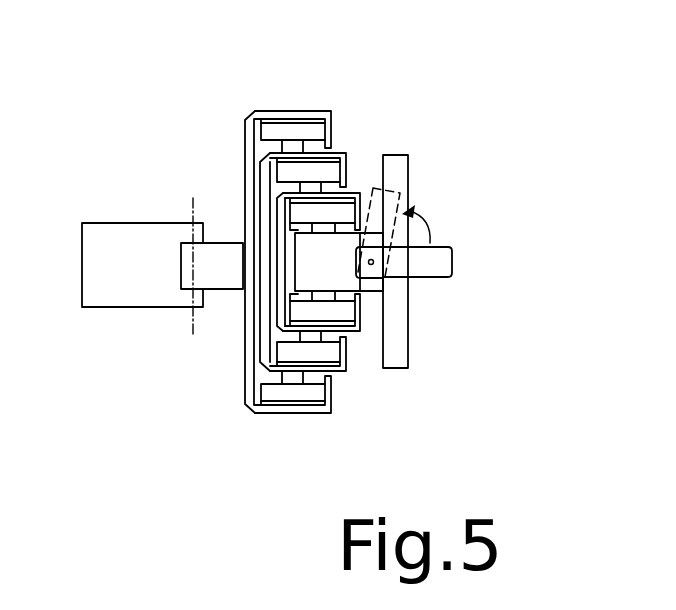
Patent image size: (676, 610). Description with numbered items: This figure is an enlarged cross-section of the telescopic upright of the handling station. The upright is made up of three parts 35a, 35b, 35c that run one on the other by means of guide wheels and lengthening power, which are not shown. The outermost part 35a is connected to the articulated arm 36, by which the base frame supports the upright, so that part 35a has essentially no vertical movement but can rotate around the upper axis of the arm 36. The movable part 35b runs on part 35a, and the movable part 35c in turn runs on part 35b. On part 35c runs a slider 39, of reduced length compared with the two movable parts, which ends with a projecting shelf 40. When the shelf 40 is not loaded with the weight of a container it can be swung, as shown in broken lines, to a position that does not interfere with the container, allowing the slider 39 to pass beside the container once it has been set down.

The outer part of the telescopic upright 35a is at (243, 133).
The movable part of the telescopic upright 35b is at (346, 153).
The movable part of the telescopic upright 35c is at (362, 192).
The articulated arm 36 is at (127, 222).
The slider 39 is at (363, 288).
The projecting shelf 40 is at (452, 247).